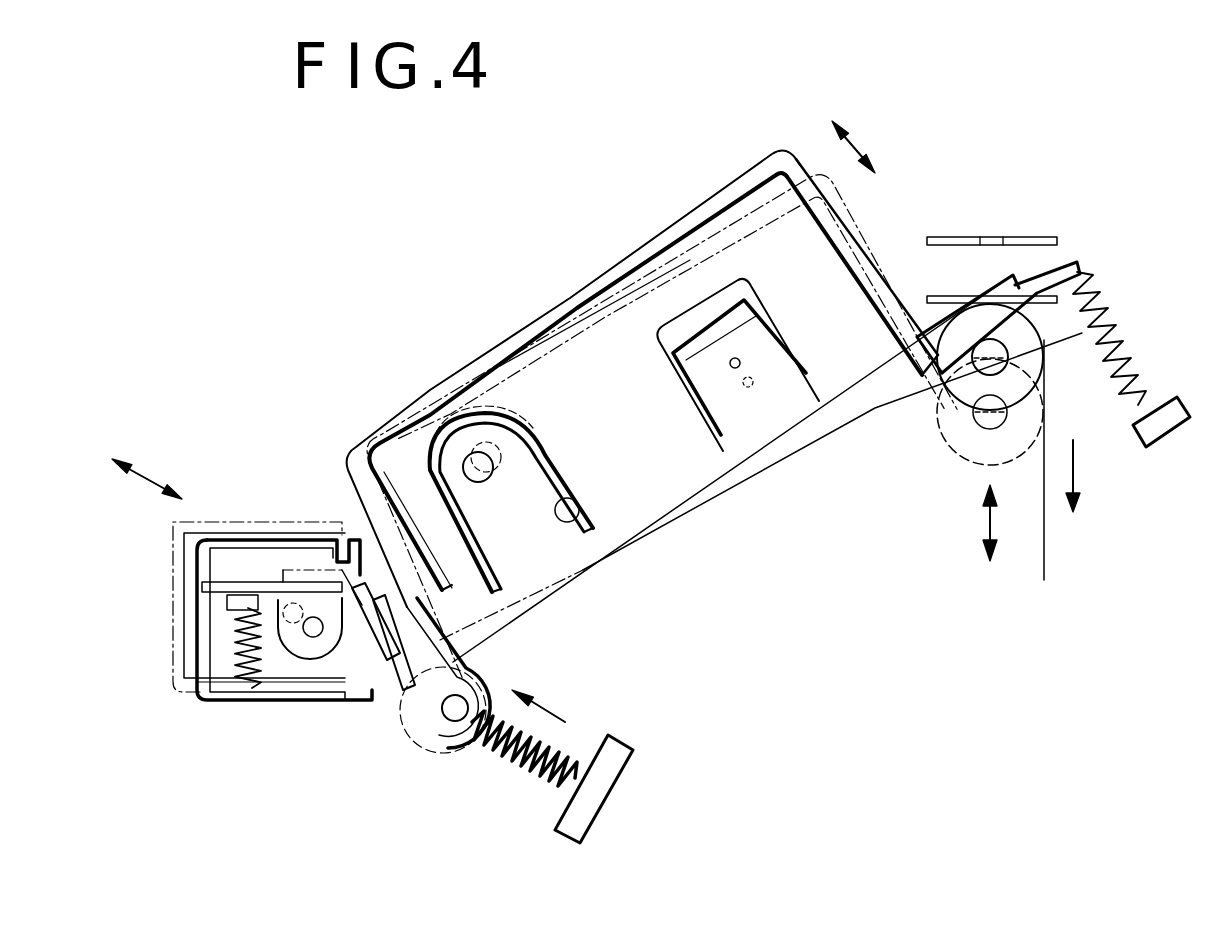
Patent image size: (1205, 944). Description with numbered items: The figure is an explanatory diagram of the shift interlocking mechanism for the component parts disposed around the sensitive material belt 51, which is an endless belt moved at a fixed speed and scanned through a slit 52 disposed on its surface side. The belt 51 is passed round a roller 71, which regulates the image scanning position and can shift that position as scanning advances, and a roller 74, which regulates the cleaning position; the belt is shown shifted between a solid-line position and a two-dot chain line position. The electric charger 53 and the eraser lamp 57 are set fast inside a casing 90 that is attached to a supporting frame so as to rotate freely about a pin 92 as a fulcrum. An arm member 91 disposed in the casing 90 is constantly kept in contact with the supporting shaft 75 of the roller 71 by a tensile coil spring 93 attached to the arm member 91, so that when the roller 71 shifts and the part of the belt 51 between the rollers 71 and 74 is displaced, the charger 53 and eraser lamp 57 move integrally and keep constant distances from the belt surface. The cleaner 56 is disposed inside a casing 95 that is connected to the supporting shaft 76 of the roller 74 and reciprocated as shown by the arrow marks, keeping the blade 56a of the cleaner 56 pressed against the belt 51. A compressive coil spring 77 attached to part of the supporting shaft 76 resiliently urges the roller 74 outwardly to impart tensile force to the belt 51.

The casing 90 is at (610, 266).
The sensitive material belt 51 is at (657, 517).
The pin 92 is at (555, 520).
The eraser lamp 57 is at (482, 482).
The electric charger 53 is at (659, 350).
The slit 52 is at (1003, 240).
The arm member 91 is at (1017, 284).
The roller 71 is at (1040, 398).
The supporting shaft 75 is at (930, 397).
The tensile coil spring 93 is at (1140, 364).
The roller 74 is at (490, 690).
The supporting shaft 76 is at (455, 722).
The compressive coil spring 77 is at (512, 770).
The casing 95 is at (208, 700).
The cleaner 56 is at (278, 660).
The blade 56a is at (372, 680).